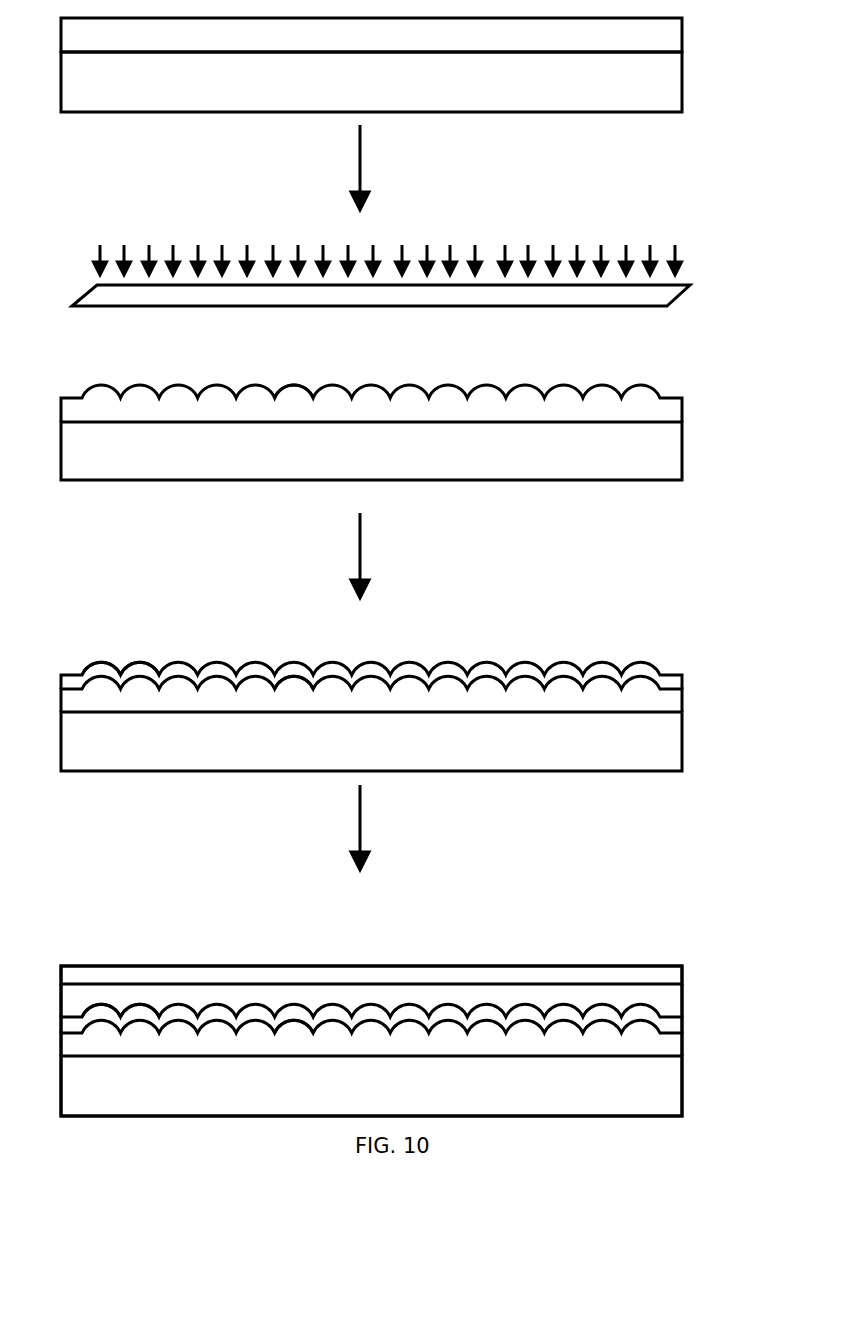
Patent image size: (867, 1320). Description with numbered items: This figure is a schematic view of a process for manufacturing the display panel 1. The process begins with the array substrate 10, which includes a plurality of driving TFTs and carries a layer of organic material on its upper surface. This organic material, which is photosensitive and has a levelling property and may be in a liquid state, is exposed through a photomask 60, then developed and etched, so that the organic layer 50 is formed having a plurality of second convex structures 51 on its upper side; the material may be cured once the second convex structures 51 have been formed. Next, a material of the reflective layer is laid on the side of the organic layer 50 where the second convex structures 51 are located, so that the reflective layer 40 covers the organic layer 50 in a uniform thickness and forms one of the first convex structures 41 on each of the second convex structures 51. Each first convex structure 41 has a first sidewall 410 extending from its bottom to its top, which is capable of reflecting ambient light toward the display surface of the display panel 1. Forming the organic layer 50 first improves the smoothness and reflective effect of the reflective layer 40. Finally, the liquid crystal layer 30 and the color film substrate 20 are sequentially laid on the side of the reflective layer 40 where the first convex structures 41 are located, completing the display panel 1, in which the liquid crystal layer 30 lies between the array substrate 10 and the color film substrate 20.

The display panel 1 is at (72, 901).
The array substrate 10 is at (655, 80).
The color film substrate 20 is at (655, 975).
The liquid crystal layer 30 is at (655, 998).
The reflective layer 40 is at (665, 680).
The first convex structure 41 is at (155, 607).
The first sidewall 410 is at (108, 663).
The organic layer 50 is at (655, 413).
The second convex structure 51 is at (291, 385).
The photomask 60 is at (655, 302).